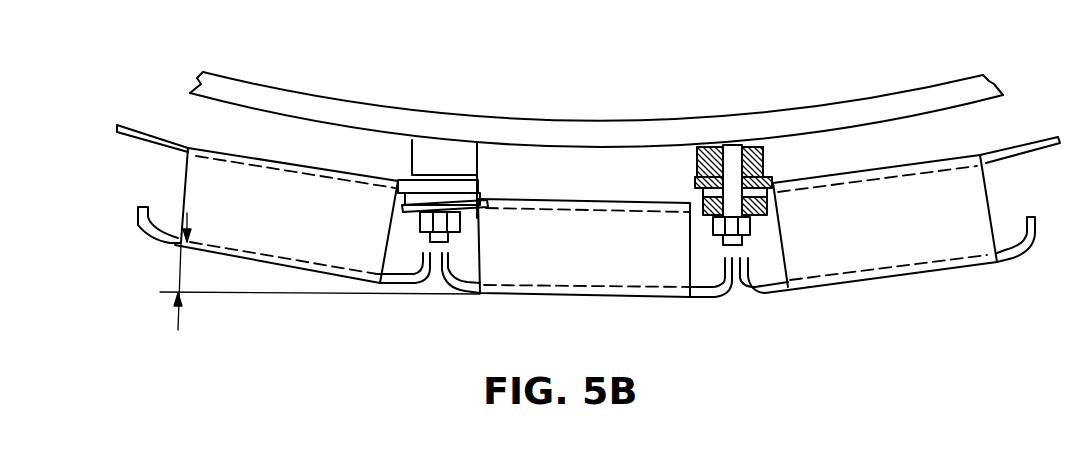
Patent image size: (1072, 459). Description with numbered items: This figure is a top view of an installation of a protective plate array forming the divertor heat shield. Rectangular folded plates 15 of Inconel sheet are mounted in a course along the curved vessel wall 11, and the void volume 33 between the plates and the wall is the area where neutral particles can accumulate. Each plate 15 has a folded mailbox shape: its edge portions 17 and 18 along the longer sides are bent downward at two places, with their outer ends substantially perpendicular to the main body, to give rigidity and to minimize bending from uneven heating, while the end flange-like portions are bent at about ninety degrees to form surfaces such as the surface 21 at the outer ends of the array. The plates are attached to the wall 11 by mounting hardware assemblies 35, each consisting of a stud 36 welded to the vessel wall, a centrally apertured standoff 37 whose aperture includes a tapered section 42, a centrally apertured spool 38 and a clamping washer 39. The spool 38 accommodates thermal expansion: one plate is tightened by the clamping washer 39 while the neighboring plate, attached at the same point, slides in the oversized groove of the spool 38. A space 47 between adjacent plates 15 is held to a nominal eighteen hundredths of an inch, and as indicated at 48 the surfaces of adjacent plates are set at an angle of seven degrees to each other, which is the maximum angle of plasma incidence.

The vessel wall 11 is at (624, 121).
The protective plate 15 is at (978, 279).
The edge portion 17 is at (445, 262).
The edge portion 18 is at (720, 270).
The flange surface 21 is at (207, 200).
The void volume 33 is at (536, 176).
The mounting hardware assembly 35 is at (716, 160).
The stud 36 is at (727, 140).
The standoff 37 is at (767, 157).
The spool 38 is at (405, 215).
The clamping washer 39 is at (410, 178).
The tapered section 42 is at (733, 167).
The space 47 is at (740, 283).
The angle between plate surfaces 48 is at (180, 265).